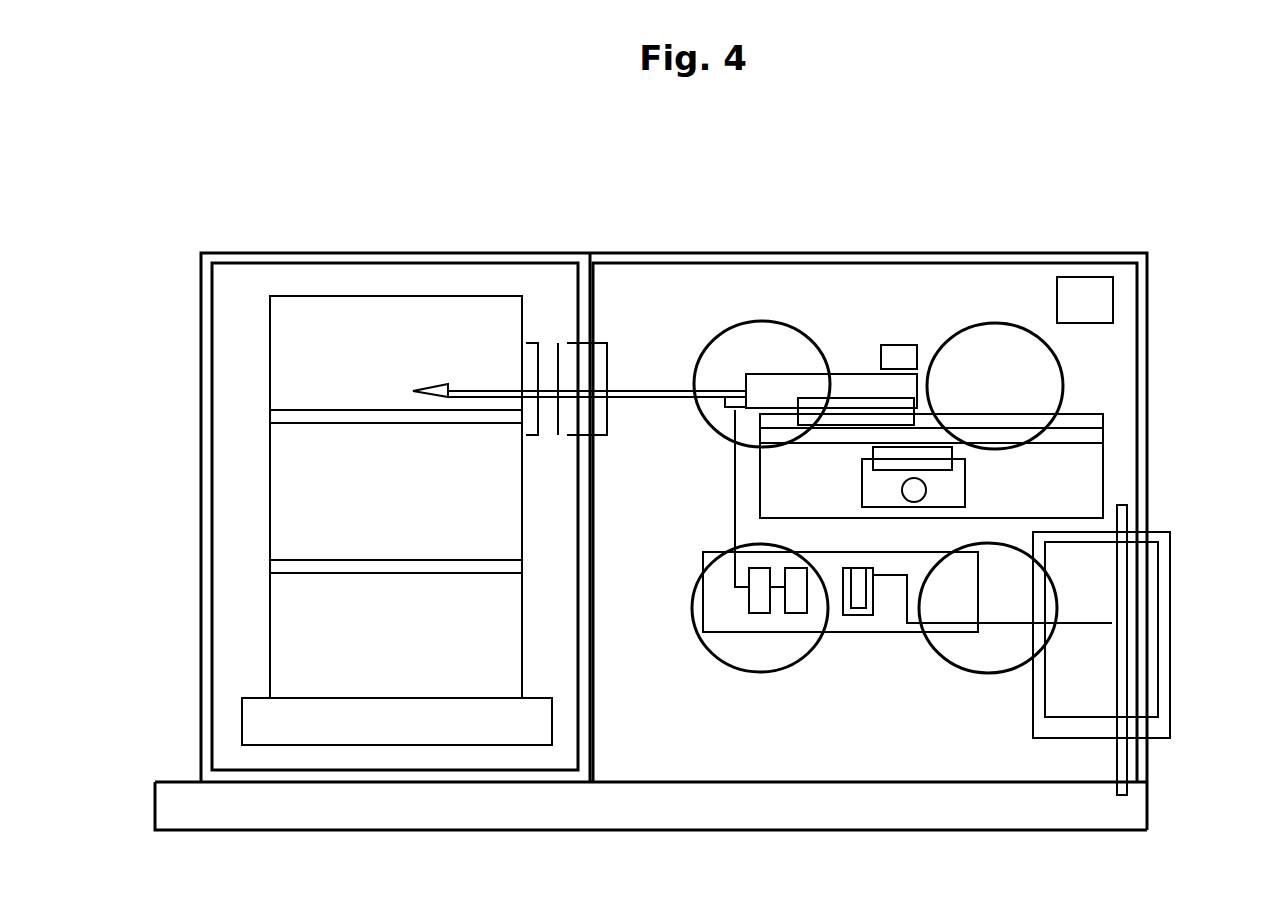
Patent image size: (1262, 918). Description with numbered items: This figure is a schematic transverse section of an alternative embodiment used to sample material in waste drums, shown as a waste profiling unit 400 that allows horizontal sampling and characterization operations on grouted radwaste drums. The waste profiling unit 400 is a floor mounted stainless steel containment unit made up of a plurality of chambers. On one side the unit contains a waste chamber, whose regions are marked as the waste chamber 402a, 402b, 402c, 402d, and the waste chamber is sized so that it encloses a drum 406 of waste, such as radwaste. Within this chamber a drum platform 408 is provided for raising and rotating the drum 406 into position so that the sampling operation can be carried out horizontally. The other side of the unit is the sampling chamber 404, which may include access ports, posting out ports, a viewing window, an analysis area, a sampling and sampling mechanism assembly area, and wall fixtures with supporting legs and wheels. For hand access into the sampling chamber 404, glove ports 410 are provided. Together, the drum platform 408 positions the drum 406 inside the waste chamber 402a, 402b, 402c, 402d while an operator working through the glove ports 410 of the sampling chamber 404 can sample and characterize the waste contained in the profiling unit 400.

The waste profiling unit 400 is at (1148, 230).
The waste chamber 402a is at (725, 308).
The waste chamber 402b is at (980, 323).
The waste chamber 402c is at (727, 668).
The waste chamber 402d is at (972, 675).
The sampling chamber 404 is at (965, 485).
The drum 406 is at (465, 391).
The drum platform 408 is at (841, 368).
The glove ports 410 is at (760, 620).